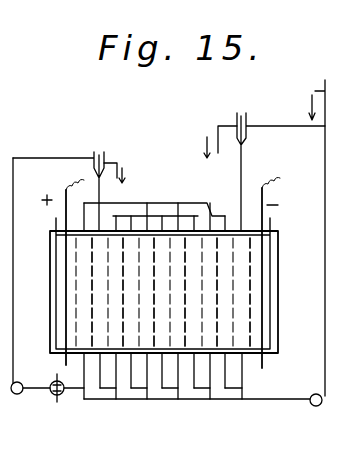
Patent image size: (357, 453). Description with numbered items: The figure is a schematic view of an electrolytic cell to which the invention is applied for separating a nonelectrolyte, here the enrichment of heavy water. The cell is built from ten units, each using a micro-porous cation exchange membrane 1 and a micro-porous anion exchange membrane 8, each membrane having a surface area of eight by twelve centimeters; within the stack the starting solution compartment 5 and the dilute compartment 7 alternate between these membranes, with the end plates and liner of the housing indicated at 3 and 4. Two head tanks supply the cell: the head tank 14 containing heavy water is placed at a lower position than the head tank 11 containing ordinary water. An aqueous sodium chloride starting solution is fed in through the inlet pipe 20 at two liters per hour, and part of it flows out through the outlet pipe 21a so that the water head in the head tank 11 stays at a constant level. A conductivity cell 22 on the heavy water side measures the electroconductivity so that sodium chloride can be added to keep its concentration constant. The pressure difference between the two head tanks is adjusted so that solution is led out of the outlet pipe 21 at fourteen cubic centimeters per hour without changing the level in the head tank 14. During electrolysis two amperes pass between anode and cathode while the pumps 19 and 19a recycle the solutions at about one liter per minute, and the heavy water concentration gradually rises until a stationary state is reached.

The micro-porous cation exchange membrane 1 is at (76, 307).
The housing liner 3 is at (62, 334).
The end electrode plate 4 is at (268, 332).
The starting solution compartment 5 is at (178, 250).
The dilute compartment 7 is at (182, 232).
The micro-porous anion exchange membrane 8 is at (91, 258).
The head tank 11 is at (248, 125).
The head tank 14 is at (102, 157).
The pump 19 is at (25, 399).
The pump 19a is at (311, 406).
The inlet pipe 20 is at (307, 237).
The outlet pipe 21 is at (118, 163).
The outlet pipe 21a is at (218, 128).
The conductivity cell 22 is at (52, 401).